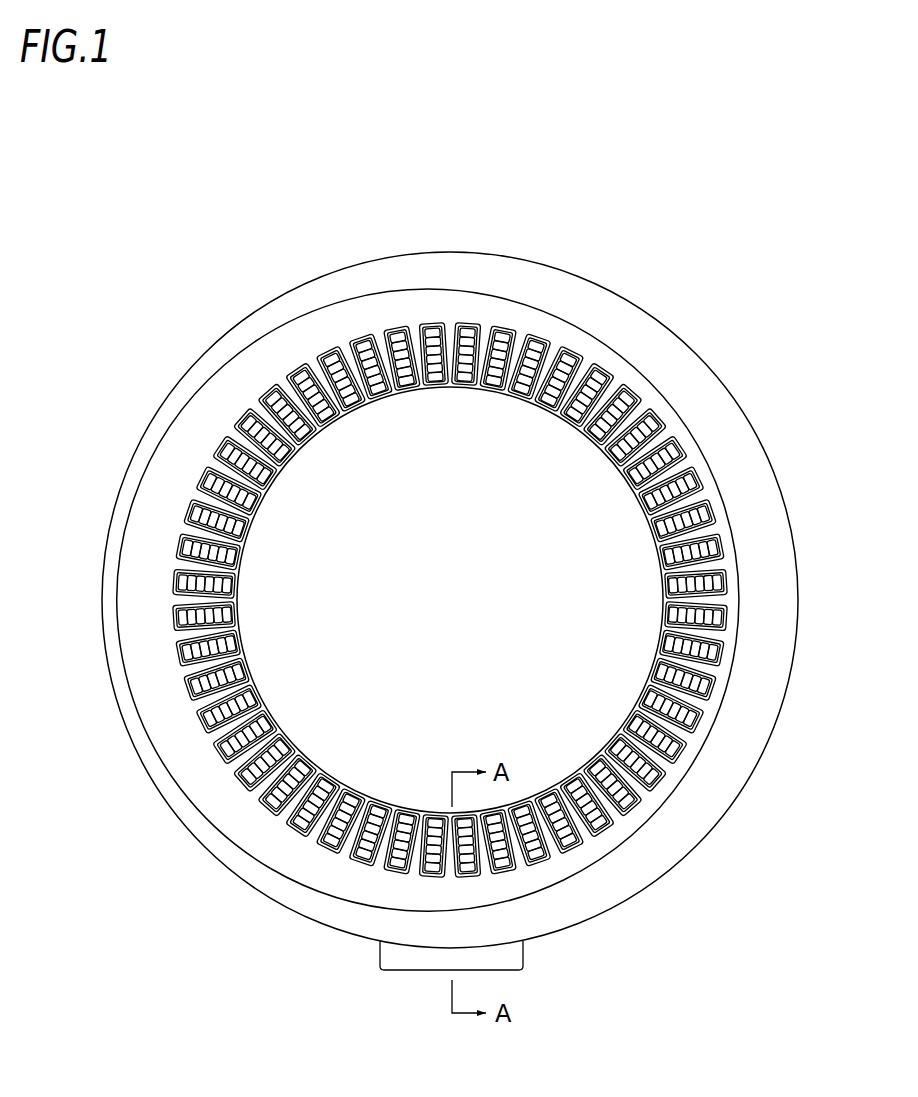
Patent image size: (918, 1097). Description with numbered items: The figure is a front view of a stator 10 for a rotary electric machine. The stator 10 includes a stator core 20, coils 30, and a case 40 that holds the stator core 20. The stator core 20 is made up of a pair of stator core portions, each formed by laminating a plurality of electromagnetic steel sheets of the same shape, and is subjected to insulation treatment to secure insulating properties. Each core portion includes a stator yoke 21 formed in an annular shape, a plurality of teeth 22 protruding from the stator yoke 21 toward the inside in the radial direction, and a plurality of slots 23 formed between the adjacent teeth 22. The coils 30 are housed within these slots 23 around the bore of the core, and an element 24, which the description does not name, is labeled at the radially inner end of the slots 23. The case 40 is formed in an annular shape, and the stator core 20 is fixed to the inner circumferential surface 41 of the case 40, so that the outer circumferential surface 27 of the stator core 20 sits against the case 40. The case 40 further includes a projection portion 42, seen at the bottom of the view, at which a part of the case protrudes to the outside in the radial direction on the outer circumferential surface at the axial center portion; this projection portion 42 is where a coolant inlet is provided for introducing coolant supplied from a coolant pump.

The stator 10 is at (788, 182).
The stator core 20 is at (738, 463).
The stator yoke 21 is at (710, 753).
The teeth 22 is at (268, 420).
The slots 23 is at (208, 470).
The slot insulator 24 is at (333, 413).
The outer circumferential surface of the stator core 27 is at (597, 884).
The coils 30 is at (720, 692).
The case 40 is at (540, 262).
The inner circumferential surface of the case 41 is at (257, 837).
The projection portion 42 is at (397, 955).